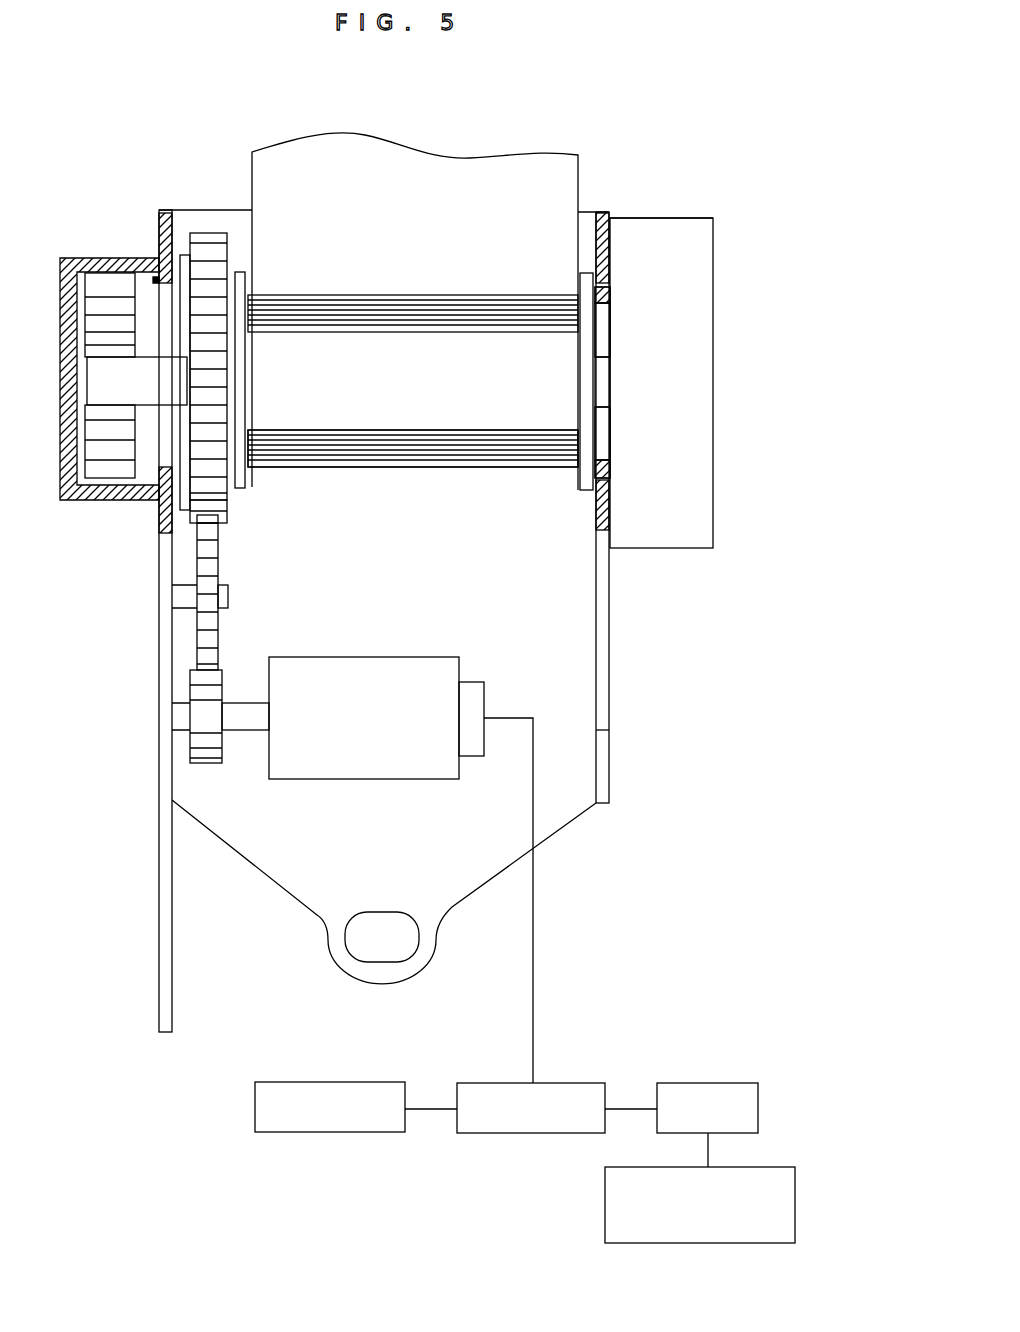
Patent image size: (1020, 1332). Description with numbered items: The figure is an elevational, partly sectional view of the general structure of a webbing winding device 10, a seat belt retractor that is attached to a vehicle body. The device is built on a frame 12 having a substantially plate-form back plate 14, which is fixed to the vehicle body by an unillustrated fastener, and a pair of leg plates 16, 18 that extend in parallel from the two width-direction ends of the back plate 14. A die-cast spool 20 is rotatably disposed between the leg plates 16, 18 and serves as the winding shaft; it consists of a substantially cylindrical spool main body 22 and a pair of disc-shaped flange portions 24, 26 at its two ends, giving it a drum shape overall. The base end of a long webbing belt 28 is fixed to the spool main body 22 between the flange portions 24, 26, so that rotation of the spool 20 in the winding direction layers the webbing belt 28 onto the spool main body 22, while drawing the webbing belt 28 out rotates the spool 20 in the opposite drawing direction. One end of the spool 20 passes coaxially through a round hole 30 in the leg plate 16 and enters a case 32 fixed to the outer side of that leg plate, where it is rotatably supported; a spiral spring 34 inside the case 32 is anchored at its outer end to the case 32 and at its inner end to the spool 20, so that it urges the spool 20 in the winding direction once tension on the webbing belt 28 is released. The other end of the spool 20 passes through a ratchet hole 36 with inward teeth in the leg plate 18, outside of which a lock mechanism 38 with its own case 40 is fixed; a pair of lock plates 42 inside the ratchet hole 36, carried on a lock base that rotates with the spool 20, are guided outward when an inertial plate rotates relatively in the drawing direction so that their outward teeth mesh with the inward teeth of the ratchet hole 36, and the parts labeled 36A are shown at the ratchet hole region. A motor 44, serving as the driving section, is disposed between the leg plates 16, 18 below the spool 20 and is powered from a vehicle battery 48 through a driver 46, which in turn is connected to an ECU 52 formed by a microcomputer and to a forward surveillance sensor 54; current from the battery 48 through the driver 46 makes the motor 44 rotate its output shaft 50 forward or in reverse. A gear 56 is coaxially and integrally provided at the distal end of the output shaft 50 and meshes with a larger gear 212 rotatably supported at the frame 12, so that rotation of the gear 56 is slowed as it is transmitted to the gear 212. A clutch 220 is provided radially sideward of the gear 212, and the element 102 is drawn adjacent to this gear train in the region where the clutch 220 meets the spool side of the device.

The webbing winding device 10 is at (580, 106).
The frame 12 is at (250, 866).
The back plate 14 is at (291, 883).
The leg plate 16 is at (158, 826).
The leg plate 18 is at (610, 707).
The spool 20 is at (406, 418).
The spool main body 22 is at (458, 418).
The flange portion 24 is at (247, 380).
The flange portion 26 is at (580, 380).
The webbing belt 28 is at (490, 158).
The round hole 30 is at (155, 278).
The case 32 is at (78, 258).
The spiral spring 34 is at (85, 313).
The ratchet hole 36 is at (612, 290).
The lock plate 36A is at (612, 301).
The lock mechanism 38 is at (702, 210).
The case 40 is at (672, 218).
The lock plate 42 is at (610, 338).
The motor 44 is at (426, 657).
The driver 46 is at (575, 1083).
The battery 48 is at (362, 1082).
The output shaft 50 is at (258, 702).
The ECU 52 is at (733, 1083).
The forward surveillance sensor 54 is at (755, 1176).
The gear 56 is at (212, 765).
The clutch 102 is at (195, 519).
The gear 212 is at (222, 572).
The clutch 220 is at (234, 512).